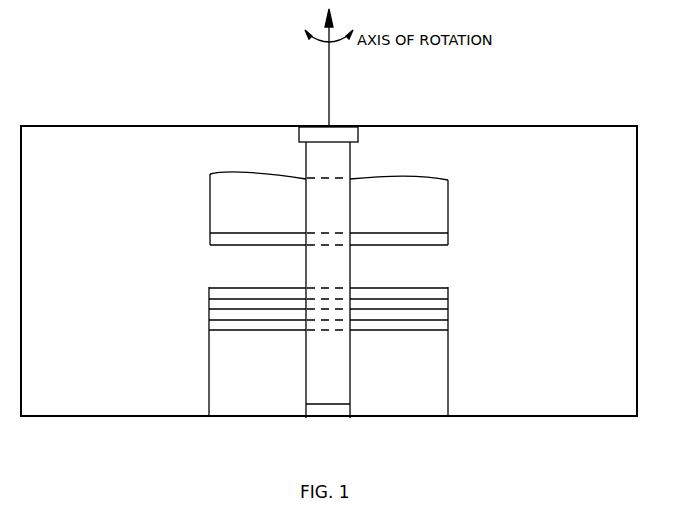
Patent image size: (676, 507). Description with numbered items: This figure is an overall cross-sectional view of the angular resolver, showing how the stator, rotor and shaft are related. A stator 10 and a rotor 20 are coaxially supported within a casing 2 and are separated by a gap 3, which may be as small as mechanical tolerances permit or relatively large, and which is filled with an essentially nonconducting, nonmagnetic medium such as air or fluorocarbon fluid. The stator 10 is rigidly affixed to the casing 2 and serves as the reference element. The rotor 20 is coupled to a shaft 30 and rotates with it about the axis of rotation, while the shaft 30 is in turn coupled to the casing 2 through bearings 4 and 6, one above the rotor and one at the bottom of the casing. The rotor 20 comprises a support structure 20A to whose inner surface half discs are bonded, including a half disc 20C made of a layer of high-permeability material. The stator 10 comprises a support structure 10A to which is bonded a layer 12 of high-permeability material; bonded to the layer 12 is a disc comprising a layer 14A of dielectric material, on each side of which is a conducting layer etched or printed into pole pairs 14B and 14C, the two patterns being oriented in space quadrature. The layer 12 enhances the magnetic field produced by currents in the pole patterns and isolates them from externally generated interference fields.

The casing 2 is at (480, 128).
The gap 3 is at (329, 266).
The bearing 4 is at (340, 132).
The bearing 6 is at (342, 412).
The stator 10 is at (448, 355).
The support structure 10A is at (258, 373).
The layer of high-permeability material 12 is at (209, 326).
The layer of dielectric material 14A is at (209, 302).
The pole pairs 14B is at (209, 291).
The pole pairs 14C is at (209, 313).
The rotor 20 is at (448, 226).
The support structure 20A is at (258, 206).
The half disc 20C is at (232, 241).
The shaft 30 is at (339, 171).